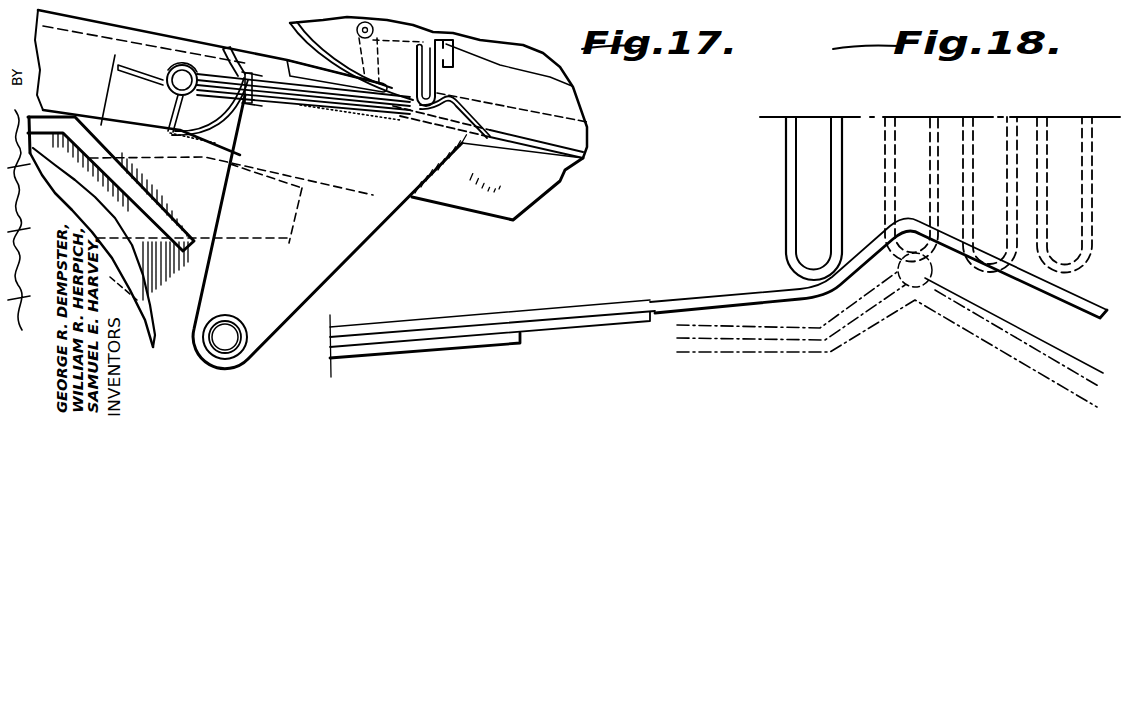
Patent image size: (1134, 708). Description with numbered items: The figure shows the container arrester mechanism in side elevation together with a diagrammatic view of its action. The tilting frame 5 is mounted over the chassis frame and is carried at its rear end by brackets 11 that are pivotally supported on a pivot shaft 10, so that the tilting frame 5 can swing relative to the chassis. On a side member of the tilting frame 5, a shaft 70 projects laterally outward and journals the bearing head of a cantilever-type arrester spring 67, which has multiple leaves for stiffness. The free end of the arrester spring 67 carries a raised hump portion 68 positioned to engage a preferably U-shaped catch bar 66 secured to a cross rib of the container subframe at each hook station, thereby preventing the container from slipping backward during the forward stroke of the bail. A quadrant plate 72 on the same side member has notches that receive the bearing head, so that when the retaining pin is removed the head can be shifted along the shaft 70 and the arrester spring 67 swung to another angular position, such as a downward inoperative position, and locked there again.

In FIG. 17, the tilting frame 5 is at (548, 199).
In FIG. 17, the pivot shaft 10 is at (227, 337).
In FIG. 17, the brackets 11 is at (333, 254).
In FIG. 17, the catch bar 66 is at (422, 107).
In FIG. 18, the catch bar 66 is at (790, 126).
In FIG. 17, the arrester spring 67 is at (340, 105).
In FIG. 18, the arrester spring 67 is at (583, 313).
In FIG. 17, the raised hump portion 68 is at (462, 105).
In FIG. 18, the raised hump portion 68 is at (890, 232).
In FIG. 17, the shaft 70 is at (183, 78).
In FIG. 17, the quadrant plate 72 is at (233, 52).